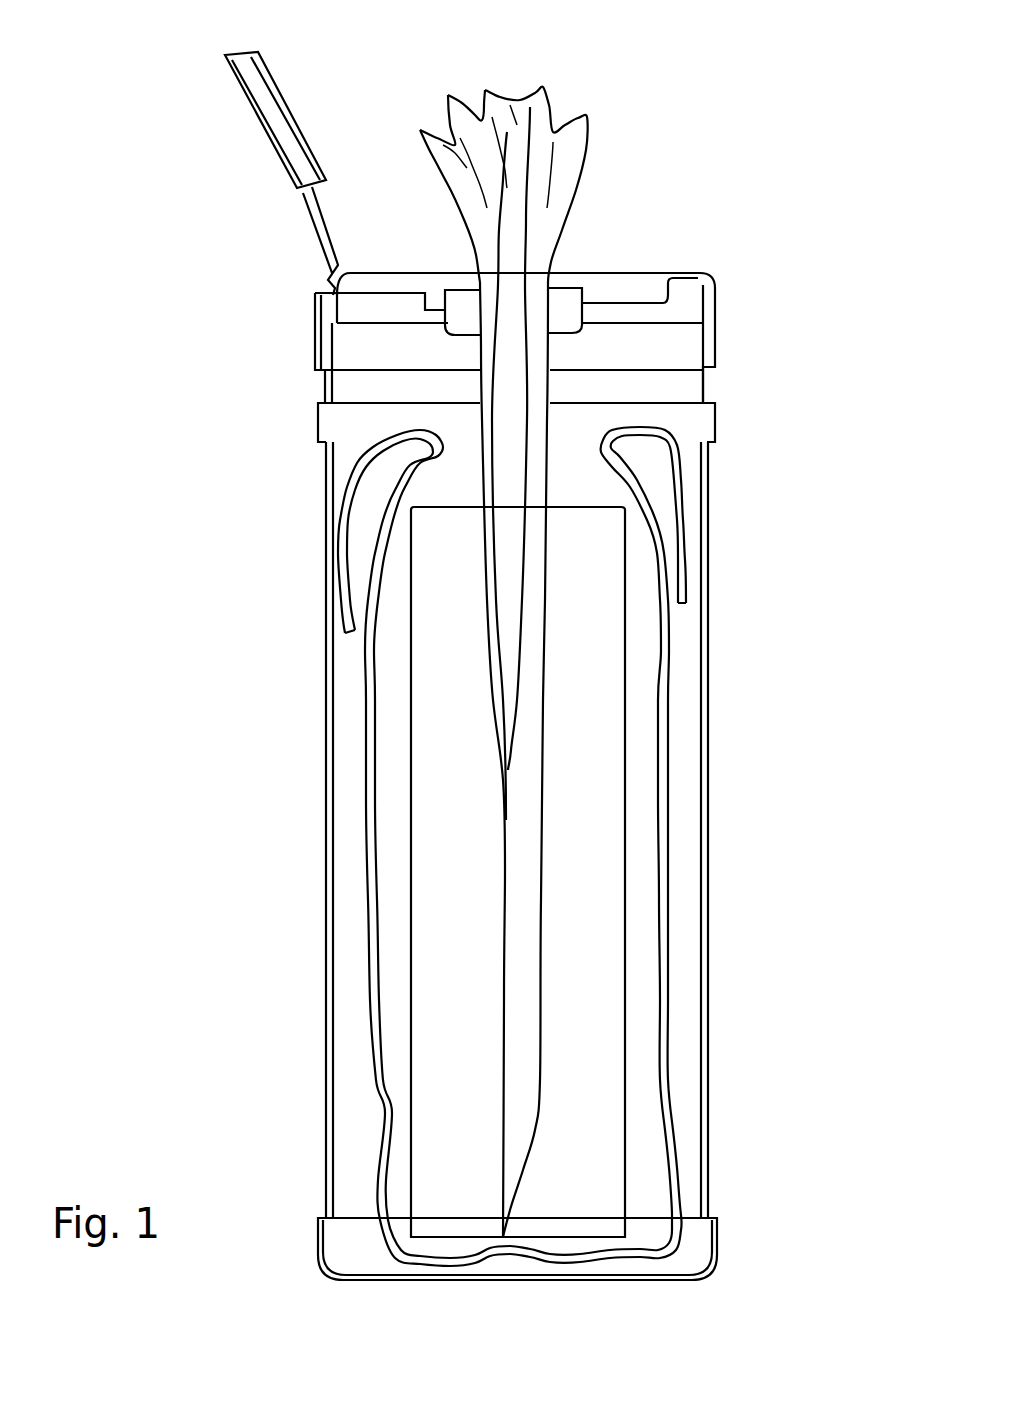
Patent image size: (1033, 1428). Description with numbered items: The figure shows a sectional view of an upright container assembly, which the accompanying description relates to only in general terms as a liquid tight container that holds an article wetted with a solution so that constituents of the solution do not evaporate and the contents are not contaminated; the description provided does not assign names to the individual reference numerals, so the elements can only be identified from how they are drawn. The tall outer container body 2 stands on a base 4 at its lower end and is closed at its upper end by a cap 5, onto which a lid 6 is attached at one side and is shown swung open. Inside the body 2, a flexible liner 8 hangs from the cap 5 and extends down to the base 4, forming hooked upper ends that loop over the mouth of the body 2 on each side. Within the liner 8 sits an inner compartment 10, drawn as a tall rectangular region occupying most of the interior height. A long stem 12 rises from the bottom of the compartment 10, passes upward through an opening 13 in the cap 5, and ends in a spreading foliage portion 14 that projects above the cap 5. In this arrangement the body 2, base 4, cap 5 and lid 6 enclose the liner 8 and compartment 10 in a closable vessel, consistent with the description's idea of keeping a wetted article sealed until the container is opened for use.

The container body 2 is at (328, 672).
The base 4 is at (320, 1250).
The cap 5 is at (718, 322).
The lid 6 is at (262, 128).
The liner sleeve 8 is at (682, 817).
The water reservoir / inner compartment 10 is at (612, 952).
The plant stem 12 is at (533, 873).
The stem opening / slot 13 is at (553, 315).
The plant foliage 14 is at (578, 118).